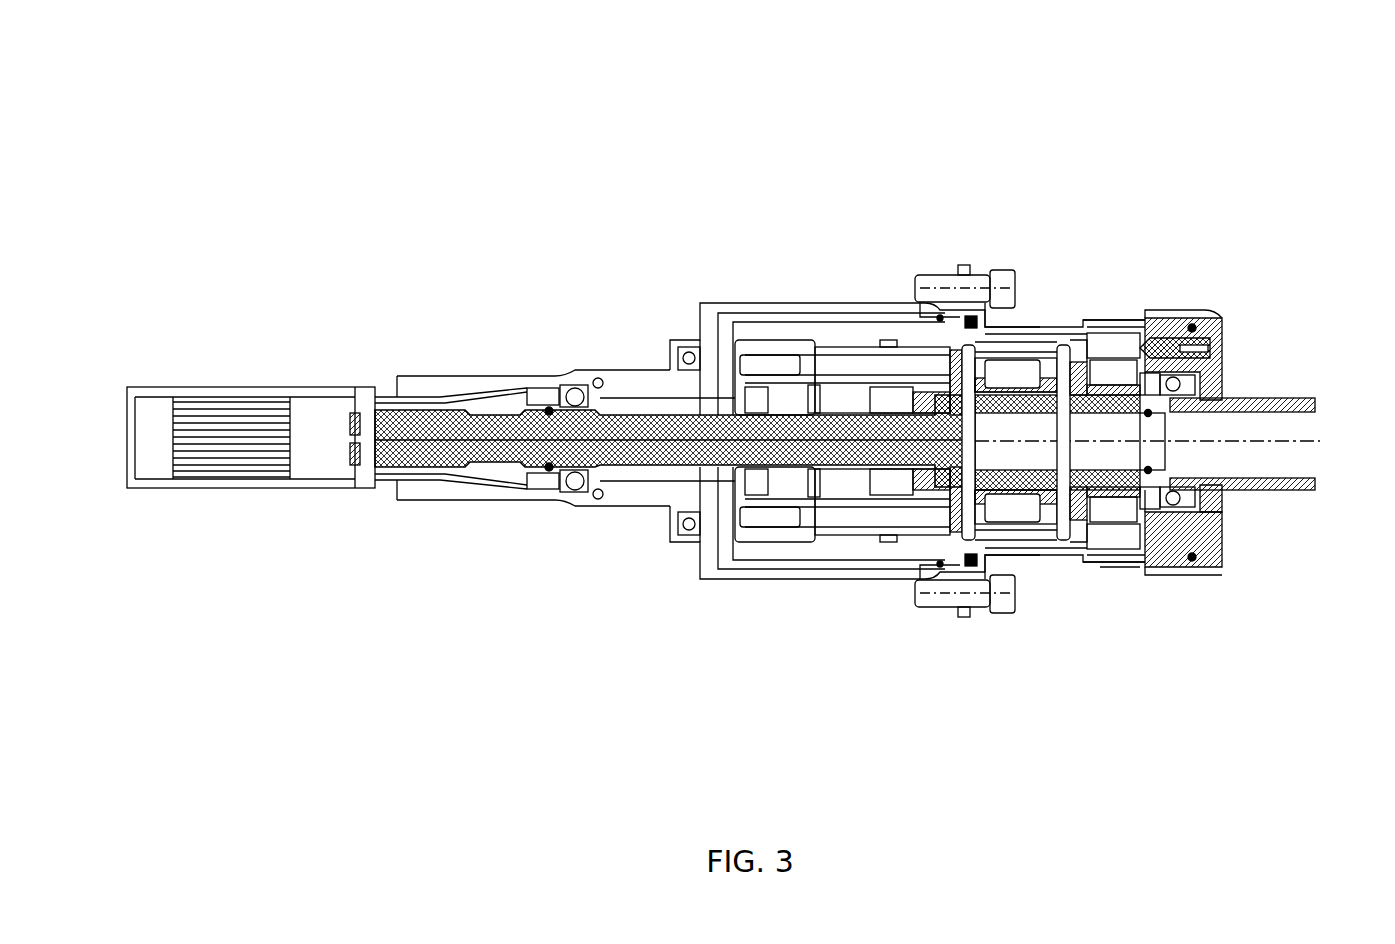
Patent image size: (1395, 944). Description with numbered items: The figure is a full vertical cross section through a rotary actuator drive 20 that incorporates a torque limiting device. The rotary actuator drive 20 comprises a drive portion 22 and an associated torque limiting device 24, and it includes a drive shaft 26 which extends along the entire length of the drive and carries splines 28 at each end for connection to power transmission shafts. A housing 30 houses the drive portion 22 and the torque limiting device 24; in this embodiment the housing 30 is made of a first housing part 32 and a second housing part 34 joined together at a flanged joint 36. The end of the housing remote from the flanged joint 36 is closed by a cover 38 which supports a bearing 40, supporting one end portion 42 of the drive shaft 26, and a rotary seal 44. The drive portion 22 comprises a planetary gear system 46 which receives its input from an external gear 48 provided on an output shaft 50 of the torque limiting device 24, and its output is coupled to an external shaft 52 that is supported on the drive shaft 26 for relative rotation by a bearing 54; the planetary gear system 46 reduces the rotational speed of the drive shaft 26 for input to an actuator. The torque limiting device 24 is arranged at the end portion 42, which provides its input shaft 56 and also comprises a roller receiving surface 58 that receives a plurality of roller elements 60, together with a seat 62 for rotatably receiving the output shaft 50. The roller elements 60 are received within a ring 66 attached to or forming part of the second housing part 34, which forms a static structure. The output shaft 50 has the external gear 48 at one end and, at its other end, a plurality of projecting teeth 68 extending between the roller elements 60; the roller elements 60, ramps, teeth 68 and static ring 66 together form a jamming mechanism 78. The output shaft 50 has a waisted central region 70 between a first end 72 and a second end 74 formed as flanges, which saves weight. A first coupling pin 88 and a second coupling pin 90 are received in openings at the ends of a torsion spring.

The rotary actuator drive 20 is at (688, 140).
The drive portion 22 is at (615, 336).
The torque limiting device 24 is at (1262, 288).
The drive shaft 26 is at (1290, 485).
The splines 28 is at (240, 490).
The housing 30 is at (882, 270).
The first housing part 32 is at (767, 300).
The second housing part 34 is at (1160, 320).
The flanged joint 36 is at (975, 268).
The cover 38 is at (1225, 337).
The bearing 40 is at (1230, 365).
The end portion 42 is at (1178, 407).
The rotary seal 44 is at (1232, 397).
The planetary gear system 46 is at (790, 520).
The external gear 48 is at (892, 545).
The output shaft 50 is at (947, 540).
The external shaft 52 is at (472, 388).
The bearing 54 is at (580, 385).
The input shaft 56 is at (1113, 562).
The roller receiving surface 58 is at (1143, 562).
The roller elements 60 is at (1113, 372).
The seat 62 is at (1040, 530).
The ring 66 is at (1105, 333).
The projecting teeth 68 is at (1085, 540).
The waisted central region 70 is at (1010, 385).
The first end 72 is at (987, 540).
The second end 74 is at (1062, 352).
The jamming mechanism 78 is at (1122, 586).
The first coupling pin 88 is at (962, 355).
The second coupling pin 90 is at (1068, 355).